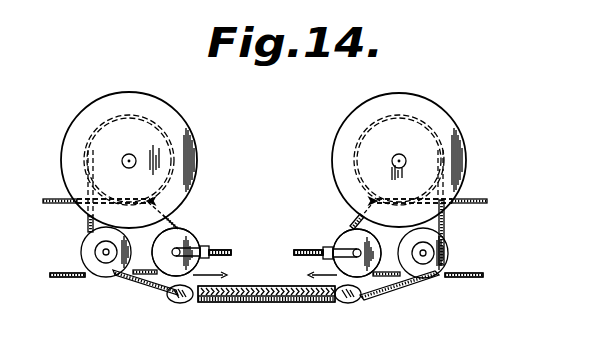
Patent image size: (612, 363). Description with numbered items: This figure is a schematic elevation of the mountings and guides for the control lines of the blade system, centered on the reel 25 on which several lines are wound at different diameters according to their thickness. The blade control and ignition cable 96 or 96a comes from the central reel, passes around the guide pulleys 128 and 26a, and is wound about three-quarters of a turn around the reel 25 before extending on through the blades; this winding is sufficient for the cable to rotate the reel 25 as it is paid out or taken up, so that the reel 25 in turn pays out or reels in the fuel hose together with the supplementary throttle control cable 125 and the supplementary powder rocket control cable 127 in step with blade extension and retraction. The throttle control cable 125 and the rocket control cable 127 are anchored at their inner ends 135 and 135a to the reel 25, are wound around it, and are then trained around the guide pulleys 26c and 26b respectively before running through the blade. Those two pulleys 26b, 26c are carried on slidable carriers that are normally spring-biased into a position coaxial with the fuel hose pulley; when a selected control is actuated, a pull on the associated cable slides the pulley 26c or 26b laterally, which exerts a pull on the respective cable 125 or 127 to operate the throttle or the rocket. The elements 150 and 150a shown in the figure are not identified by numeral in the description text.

The reel 25 is at (182, 132).
The guide pulley 26a is at (86, 253).
The guide pulley 26b is at (333, 240).
The guide pulley 26c is at (266, 252).
The blade control and ignition cable 96 is at (52, 199).
The blade control and ignition cable 96a is at (482, 200).
The supplementary throttle control cable 125 is at (62, 277).
The supplementary powder rocket control cable 127 is at (266, 275).
The guide pulley 128 is at (180, 303).
The inner end 135 is at (369, 201).
The inner end 135a is at (414, 201).
The threaded rod 150 is at (292, 250).
The threaded rod 150a is at (266, 252).